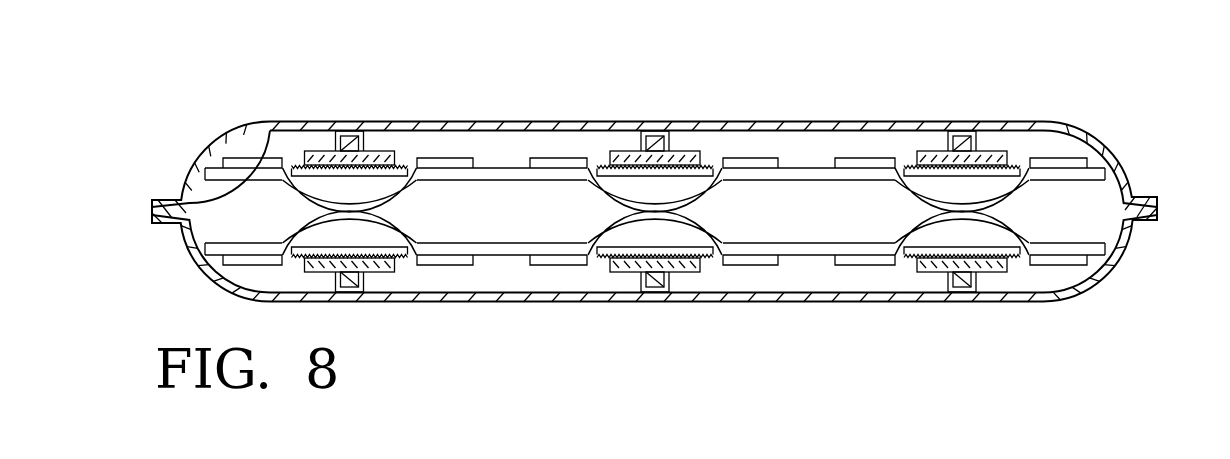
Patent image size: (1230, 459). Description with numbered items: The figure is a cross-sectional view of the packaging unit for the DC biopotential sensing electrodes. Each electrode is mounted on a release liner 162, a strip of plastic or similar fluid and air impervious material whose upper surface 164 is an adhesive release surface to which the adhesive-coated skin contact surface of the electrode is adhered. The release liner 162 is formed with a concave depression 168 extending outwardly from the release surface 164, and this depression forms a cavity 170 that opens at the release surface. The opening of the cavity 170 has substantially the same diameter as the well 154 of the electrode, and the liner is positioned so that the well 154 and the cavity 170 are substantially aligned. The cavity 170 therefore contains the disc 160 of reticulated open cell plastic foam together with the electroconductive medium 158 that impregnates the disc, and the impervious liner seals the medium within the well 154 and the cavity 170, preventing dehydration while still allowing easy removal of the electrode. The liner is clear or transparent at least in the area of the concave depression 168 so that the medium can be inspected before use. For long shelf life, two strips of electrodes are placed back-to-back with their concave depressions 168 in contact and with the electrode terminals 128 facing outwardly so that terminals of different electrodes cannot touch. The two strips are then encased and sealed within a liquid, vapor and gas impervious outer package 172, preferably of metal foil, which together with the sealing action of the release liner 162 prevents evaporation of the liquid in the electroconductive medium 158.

The electrode terminal 128 is at (668, 133).
The well 154 is at (398, 162).
The electroconductive medium 158 is at (937, 227).
The disc of reticulated open cell plastic foam 160 is at (286, 165).
The release liner 162 is at (1078, 182).
The upper surface (adhesive release surface) 164 is at (497, 167).
The concave depression 168 is at (287, 195).
The cavity 170 is at (367, 187).
The outer package 172 is at (837, 120).